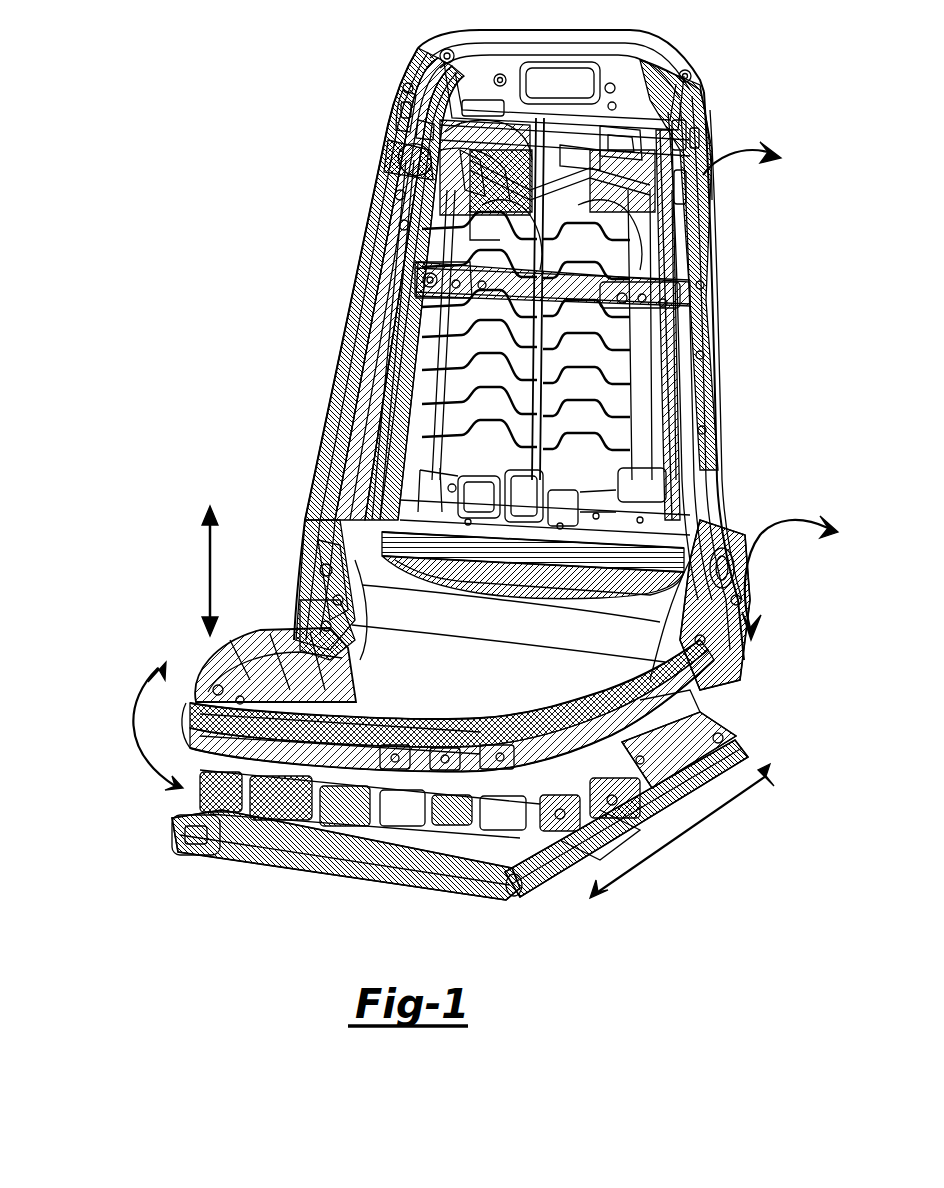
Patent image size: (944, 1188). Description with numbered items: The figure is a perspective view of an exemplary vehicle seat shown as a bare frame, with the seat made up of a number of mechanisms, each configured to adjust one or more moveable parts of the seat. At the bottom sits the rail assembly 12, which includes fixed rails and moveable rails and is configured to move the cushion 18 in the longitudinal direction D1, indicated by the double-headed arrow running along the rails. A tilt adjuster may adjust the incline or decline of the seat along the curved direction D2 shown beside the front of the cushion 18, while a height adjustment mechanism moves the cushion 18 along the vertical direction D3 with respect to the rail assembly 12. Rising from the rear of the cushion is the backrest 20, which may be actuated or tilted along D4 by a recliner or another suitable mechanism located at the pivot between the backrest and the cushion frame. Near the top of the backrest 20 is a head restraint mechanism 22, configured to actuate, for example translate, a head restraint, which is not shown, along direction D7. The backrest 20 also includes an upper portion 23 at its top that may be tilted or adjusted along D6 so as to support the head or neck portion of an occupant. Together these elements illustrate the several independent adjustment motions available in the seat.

The rail assembly 12 is at (640, 770).
The cushion 18 is at (200, 667).
The backrest 20 is at (343, 300).
The head restraint mechanism 22 is at (433, 110).
The upper portion 23 is at (703, 90).
The longitudinal direction D1 is at (682, 831).
The tilt direction D2 is at (140, 726).
The height adjustment direction D3 is at (191, 571).
The backrest tilt direction D4 is at (808, 578).
The upper portion adjustment direction D6 is at (762, 160).
The head restraint translation direction D7 is at (383, 160).